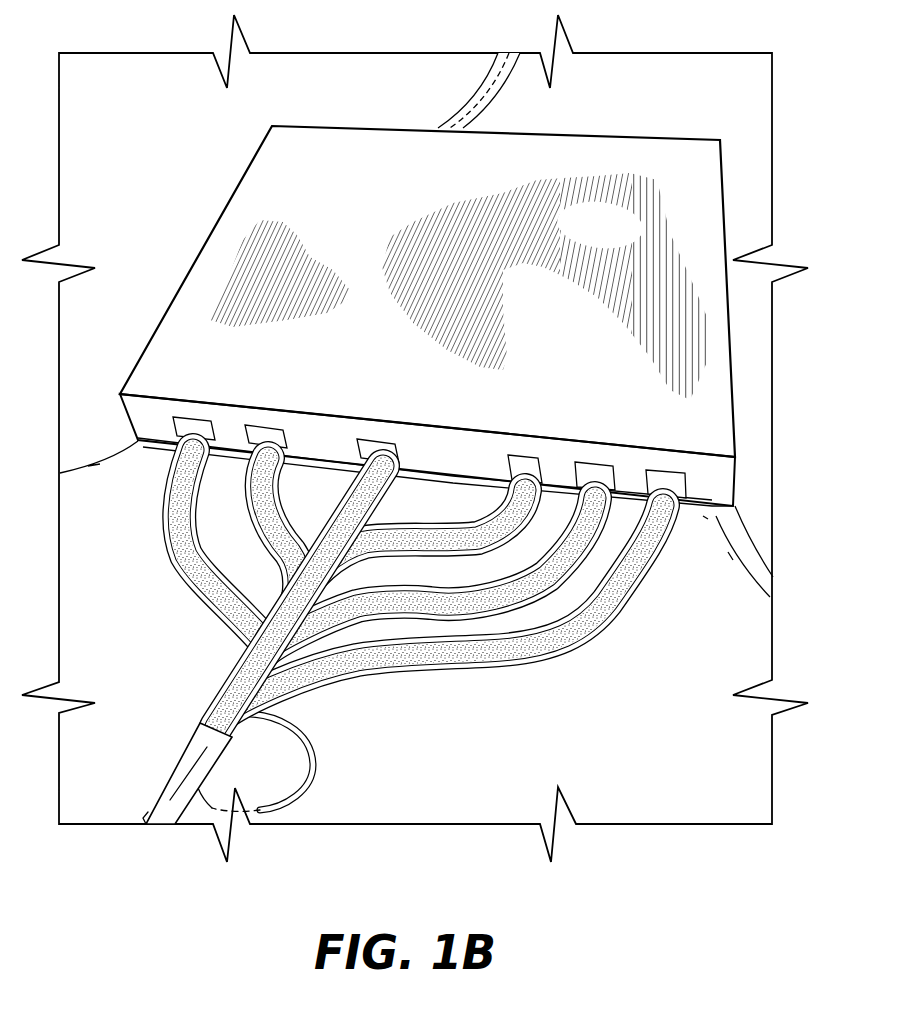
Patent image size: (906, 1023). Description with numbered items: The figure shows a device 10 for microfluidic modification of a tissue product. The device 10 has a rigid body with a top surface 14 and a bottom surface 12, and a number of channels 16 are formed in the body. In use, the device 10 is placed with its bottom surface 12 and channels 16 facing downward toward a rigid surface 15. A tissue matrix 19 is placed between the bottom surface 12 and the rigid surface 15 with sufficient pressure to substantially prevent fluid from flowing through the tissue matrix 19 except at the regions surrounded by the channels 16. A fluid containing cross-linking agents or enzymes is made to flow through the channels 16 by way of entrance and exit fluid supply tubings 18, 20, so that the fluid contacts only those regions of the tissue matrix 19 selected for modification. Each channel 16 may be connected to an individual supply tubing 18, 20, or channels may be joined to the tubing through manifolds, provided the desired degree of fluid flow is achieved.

The device 10 is at (711, 104).
The bottom surface 12 is at (718, 511).
The top surface 14 is at (696, 418).
The rigid surface 15 is at (662, 653).
The channels 16 is at (372, 447).
The entrance fluid supply tubing 18 is at (230, 698).
The tissue matrix 19 is at (445, 478).
The exit fluid supply tubing 20 is at (468, 94).